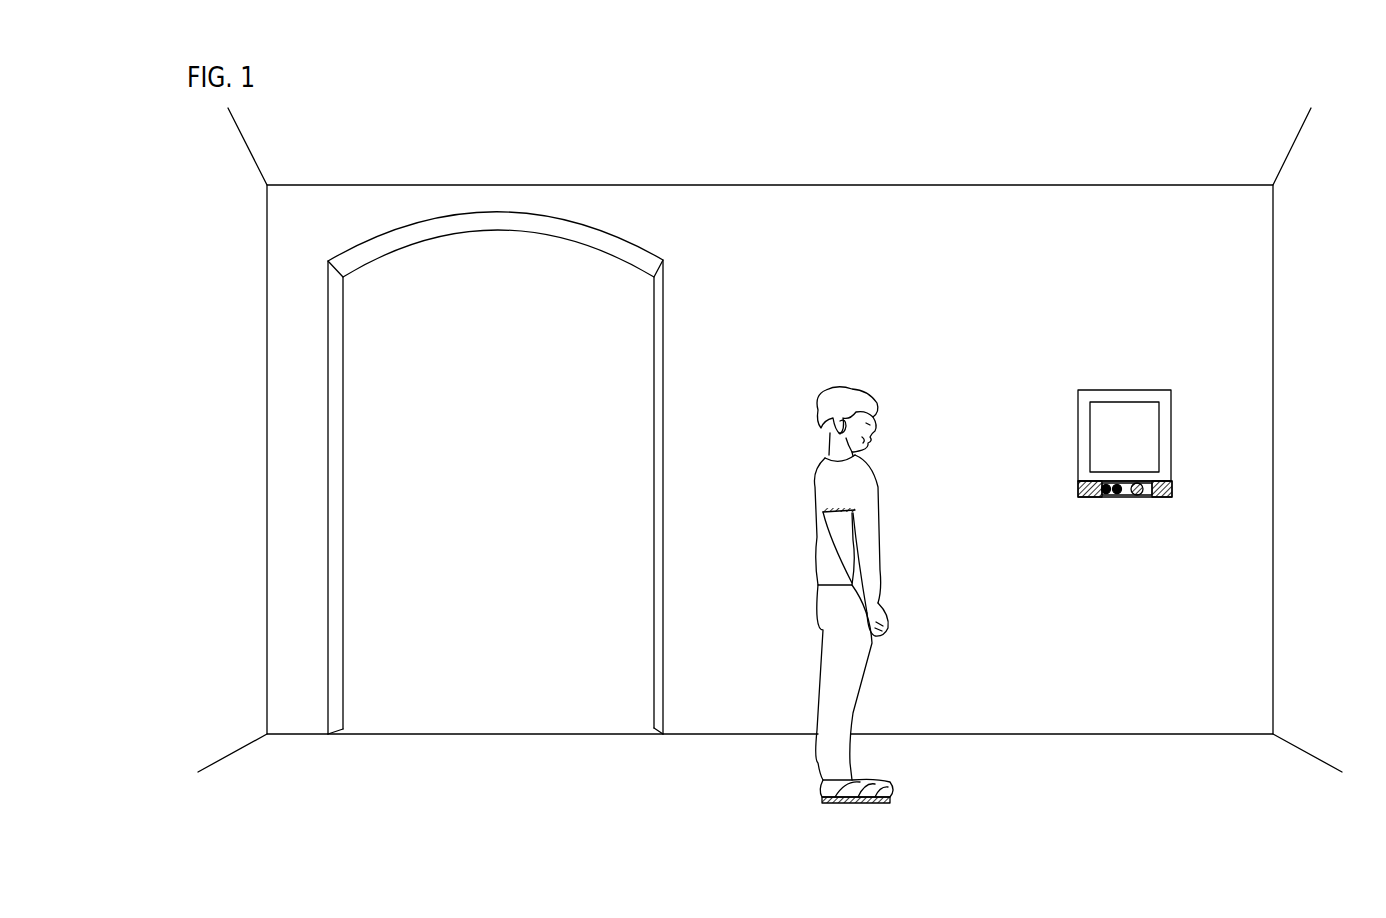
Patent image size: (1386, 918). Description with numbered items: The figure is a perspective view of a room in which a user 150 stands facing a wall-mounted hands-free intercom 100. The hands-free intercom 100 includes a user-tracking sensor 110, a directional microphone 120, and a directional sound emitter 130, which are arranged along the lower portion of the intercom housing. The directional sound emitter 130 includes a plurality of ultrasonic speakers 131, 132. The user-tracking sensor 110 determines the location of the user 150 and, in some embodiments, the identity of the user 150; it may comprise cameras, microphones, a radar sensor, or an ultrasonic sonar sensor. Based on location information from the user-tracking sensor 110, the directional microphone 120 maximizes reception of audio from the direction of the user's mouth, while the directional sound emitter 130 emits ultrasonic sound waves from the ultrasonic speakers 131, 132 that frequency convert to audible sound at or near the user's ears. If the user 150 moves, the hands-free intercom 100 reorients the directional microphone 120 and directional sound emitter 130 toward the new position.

The hands-free intercom 100 is at (1139, 358).
The user-tracking sensor 110 is at (1110, 498).
The directional microphone 120 is at (1135, 498).
The directional sound emitter 130 is at (1082, 498).
The ultrasonic speaker 131 is at (1078, 488).
The ultrasonic speaker 132 is at (1172, 488).
The user 150 is at (852, 385).